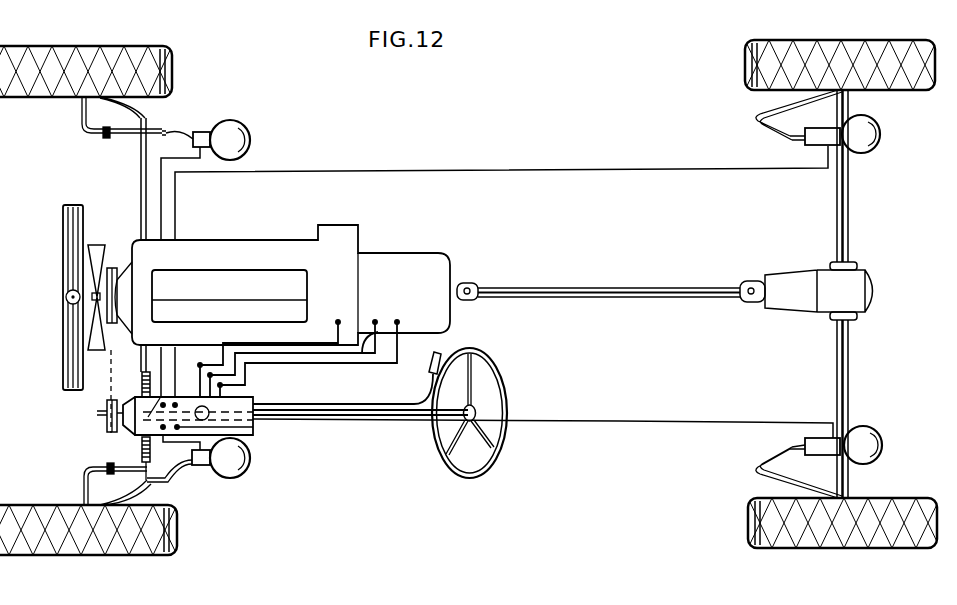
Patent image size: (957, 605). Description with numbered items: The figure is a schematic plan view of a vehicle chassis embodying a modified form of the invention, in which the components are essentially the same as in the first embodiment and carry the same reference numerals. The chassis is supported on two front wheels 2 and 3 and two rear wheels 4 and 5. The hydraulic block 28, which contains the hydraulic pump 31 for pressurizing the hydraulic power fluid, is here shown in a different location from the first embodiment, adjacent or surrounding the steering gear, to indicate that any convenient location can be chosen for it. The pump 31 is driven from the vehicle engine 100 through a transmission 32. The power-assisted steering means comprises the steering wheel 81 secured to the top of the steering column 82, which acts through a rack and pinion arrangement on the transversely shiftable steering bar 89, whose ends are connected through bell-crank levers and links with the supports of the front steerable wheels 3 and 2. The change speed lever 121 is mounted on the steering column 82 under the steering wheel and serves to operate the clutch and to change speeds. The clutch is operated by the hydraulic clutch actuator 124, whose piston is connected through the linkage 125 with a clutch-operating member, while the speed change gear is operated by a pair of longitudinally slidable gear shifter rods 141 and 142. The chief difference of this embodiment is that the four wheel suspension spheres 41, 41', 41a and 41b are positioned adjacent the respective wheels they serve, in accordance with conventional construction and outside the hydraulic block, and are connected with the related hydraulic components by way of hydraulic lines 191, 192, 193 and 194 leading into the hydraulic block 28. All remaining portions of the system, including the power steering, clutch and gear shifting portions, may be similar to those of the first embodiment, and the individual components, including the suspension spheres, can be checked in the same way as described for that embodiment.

The front wheel 2 is at (170, 78).
The front wheel 3 is at (167, 532).
The rear wheel 4 is at (745, 62).
The rear wheel 5 is at (757, 528).
The hydraulic block 28 is at (141, 430).
The hydraulic pump 31 is at (101, 420).
The transmission 32 is at (113, 371).
The wheel suspension sphere 41 is at (221, 465).
The wheel suspension sphere 41' is at (208, 244).
The wheel suspension sphere 41a is at (878, 150).
The wheel suspension sphere 41b is at (880, 452).
The steering wheel 81 is at (503, 400).
The steering column 82 is at (356, 419).
The steering bar 89 is at (143, 378).
The vehicle engine 100 is at (247, 248).
The change speed lever 121 is at (430, 372).
The hydraulic clutch actuator 124 is at (196, 364).
The linkage 125 is at (263, 342).
The gear shifter rod 141 is at (298, 366).
The gear shifter rod 142 is at (358, 366).
The hydraulic line 191 is at (142, 186).
The hydraulic line 192 is at (188, 463).
The hydraulic line 193 is at (239, 173).
The hydraulic line 194 is at (684, 425).